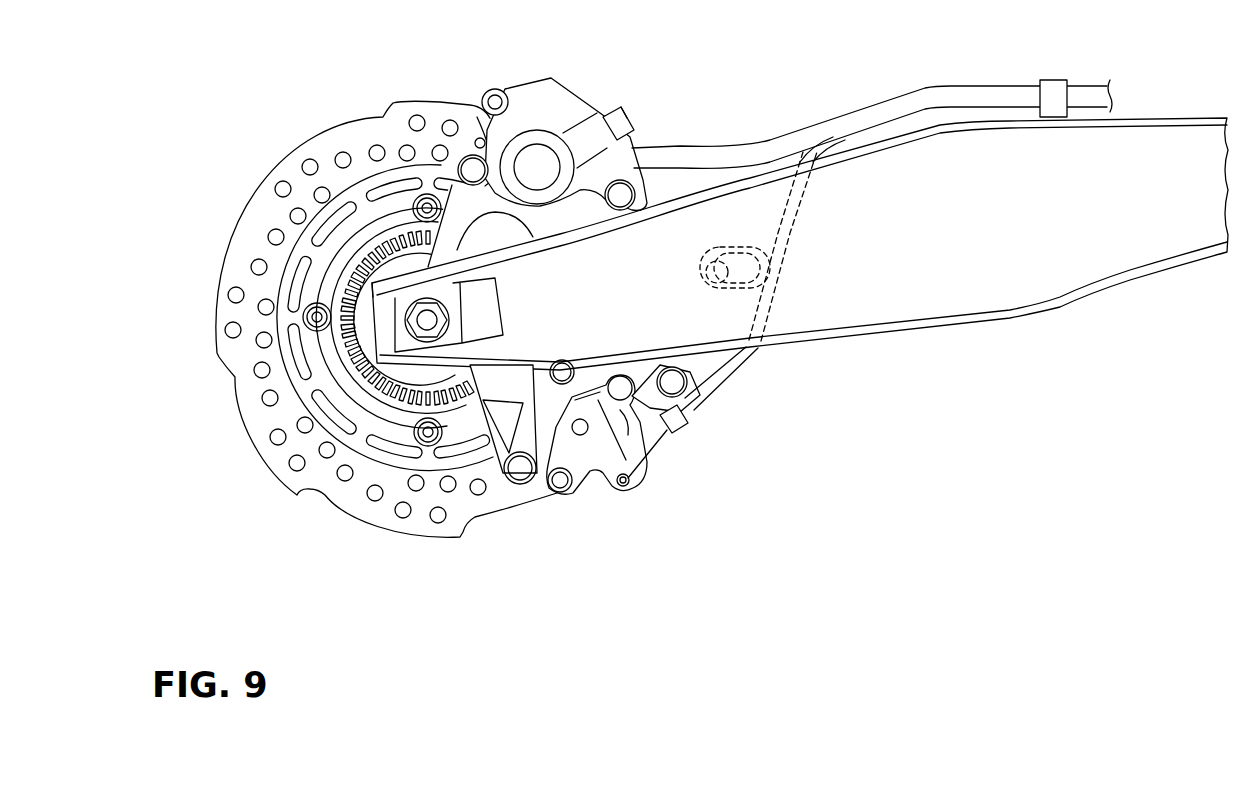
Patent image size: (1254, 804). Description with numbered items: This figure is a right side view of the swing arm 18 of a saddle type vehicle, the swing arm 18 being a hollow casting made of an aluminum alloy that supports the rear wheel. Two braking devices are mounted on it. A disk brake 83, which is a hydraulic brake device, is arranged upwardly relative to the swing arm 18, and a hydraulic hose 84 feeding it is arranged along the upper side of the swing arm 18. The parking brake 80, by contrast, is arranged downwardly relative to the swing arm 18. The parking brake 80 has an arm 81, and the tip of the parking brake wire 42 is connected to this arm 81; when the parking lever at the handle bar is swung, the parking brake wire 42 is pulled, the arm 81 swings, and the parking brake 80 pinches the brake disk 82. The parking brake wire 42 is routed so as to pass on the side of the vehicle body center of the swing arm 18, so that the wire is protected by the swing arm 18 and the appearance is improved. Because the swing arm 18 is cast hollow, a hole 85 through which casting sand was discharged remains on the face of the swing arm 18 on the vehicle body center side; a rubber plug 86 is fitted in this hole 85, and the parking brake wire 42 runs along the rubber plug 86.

The swing arm 18 is at (972, 303).
The parking brake wire 42 is at (660, 458).
The parking brake 80 is at (640, 468).
The arm 81 is at (603, 467).
The brake disk 82 is at (247, 383).
The disk brake 83 is at (565, 88).
The hydraulic hose 84 is at (713, 158).
The hole 85 is at (717, 281).
The rubber plug 86 is at (712, 252).